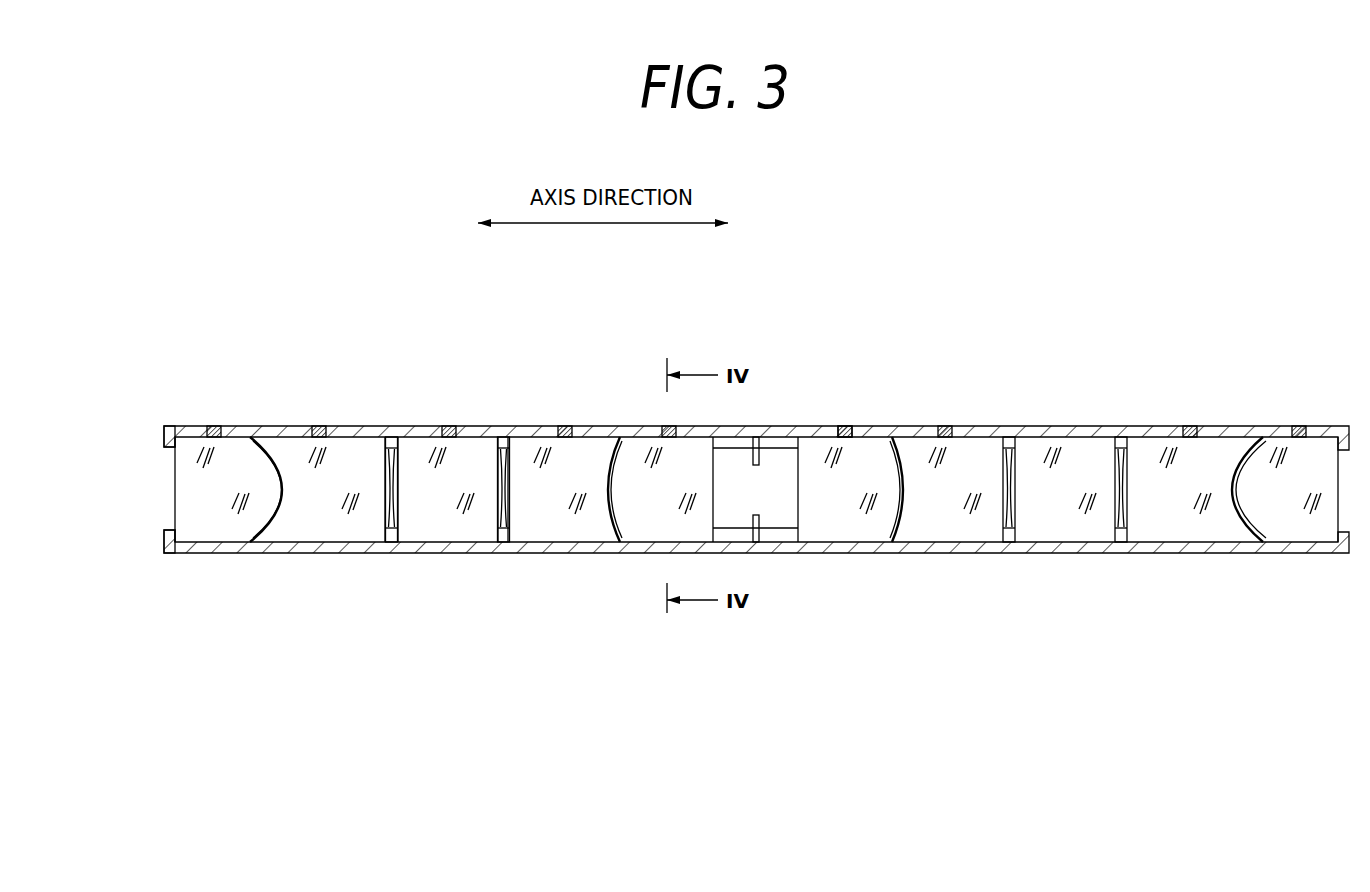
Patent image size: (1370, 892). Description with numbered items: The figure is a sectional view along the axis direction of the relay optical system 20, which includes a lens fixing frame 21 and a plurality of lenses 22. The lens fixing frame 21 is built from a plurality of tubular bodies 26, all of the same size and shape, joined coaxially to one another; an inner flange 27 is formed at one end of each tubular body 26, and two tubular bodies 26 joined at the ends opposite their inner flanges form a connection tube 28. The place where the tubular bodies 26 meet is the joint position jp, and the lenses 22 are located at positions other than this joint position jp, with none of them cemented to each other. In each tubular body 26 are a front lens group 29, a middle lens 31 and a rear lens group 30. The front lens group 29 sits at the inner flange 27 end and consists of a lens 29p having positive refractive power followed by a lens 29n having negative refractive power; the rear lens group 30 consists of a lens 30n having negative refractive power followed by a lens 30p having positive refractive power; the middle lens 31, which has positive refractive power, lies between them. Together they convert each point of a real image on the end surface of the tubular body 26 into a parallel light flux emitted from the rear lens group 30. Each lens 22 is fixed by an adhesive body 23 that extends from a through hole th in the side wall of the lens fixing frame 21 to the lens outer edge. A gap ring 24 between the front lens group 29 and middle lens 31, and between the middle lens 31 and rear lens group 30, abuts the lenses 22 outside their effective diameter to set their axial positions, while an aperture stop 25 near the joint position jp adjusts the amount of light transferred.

The relay optical system 20 is at (1018, 352).
The lens fixing frame 21 is at (916, 560).
The lens 22 is at (444, 625).
The adhesive body 23 is at (212, 427).
The gap ring 24 is at (391, 437).
The aperture stop 25 is at (760, 527).
The tubular body 26 is at (645, 553).
The inner flange 27 is at (166, 440).
The connection tube 28 is at (837, 733).
The front lens group 29 is at (400, 669).
The lens having positive refractive power 29p is at (232, 542).
The lens having negative refractive power 29n is at (330, 542).
The rear lens group 30 is at (660, 762).
The lens having negative refractive power 30n is at (563, 553).
The lens having positive refractive power 30p is at (637, 553).
The middle lens 31 is at (440, 542).
The joint position jp is at (757, 437).
The through hole th is at (843, 427).